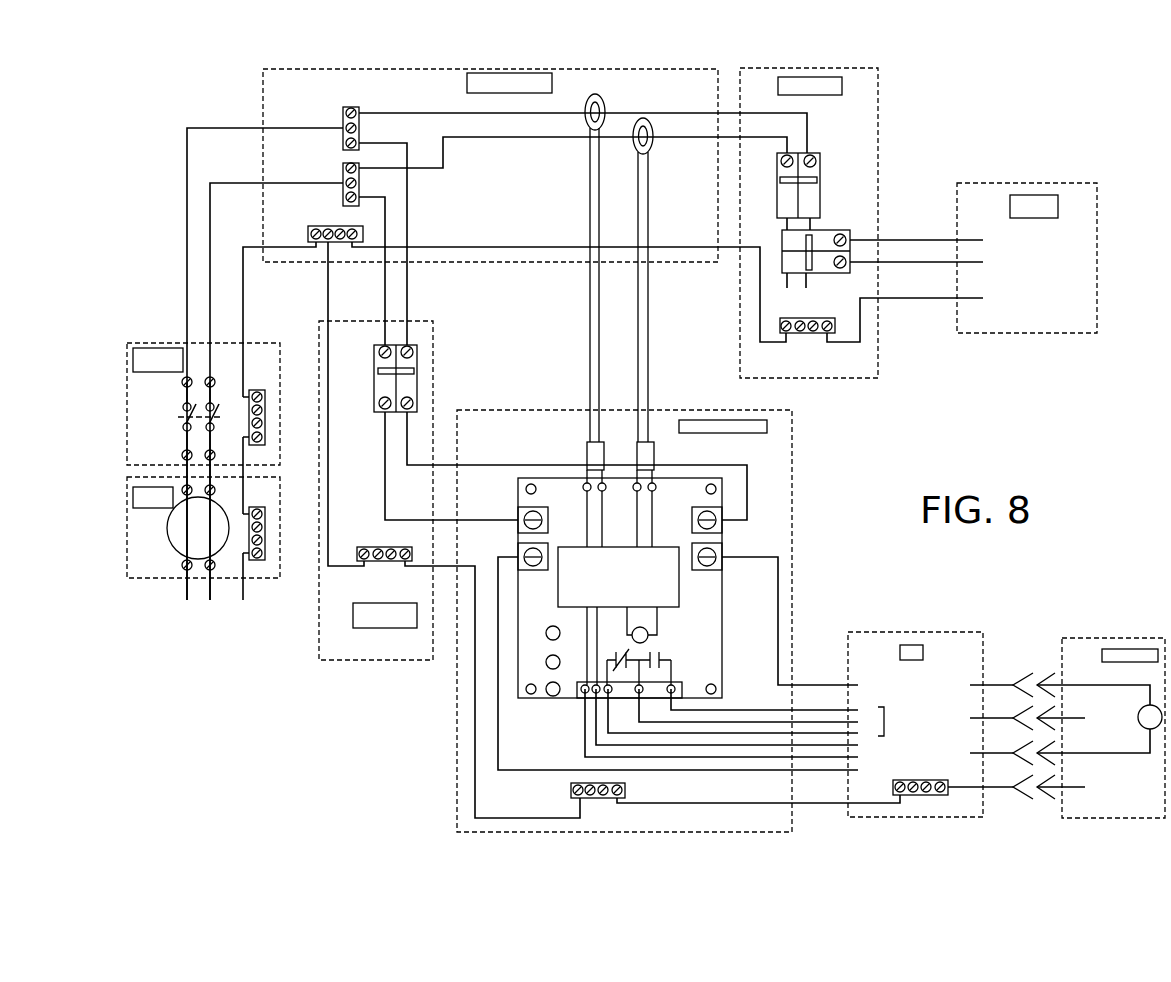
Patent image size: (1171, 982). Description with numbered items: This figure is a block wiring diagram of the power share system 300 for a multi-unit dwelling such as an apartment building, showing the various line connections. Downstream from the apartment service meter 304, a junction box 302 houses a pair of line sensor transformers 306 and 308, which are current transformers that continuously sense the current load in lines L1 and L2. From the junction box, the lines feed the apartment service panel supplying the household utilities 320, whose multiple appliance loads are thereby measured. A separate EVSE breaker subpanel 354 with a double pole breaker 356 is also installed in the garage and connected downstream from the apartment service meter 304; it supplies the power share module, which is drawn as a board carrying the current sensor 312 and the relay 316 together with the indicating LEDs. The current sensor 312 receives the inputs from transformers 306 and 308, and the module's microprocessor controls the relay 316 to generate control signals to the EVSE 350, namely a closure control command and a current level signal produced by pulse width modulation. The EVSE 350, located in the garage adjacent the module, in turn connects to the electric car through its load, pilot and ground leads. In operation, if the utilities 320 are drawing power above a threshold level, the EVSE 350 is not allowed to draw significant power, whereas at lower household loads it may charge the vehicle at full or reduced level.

The power share system 300 is at (943, 147).
The junction box 302 is at (262, 91).
The apartment service meter 304 is at (153, 582).
The line sensor transformer 306 is at (590, 118).
The line sensor transformer 308 is at (638, 147).
The current sensor 312 is at (680, 587).
The relay 316 is at (650, 637).
The utilities 320 is at (1038, 335).
The EVSE 350 is at (916, 632).
The EVSE breaker subpanel 354 is at (362, 660).
The double pole breaker 356 is at (417, 355).